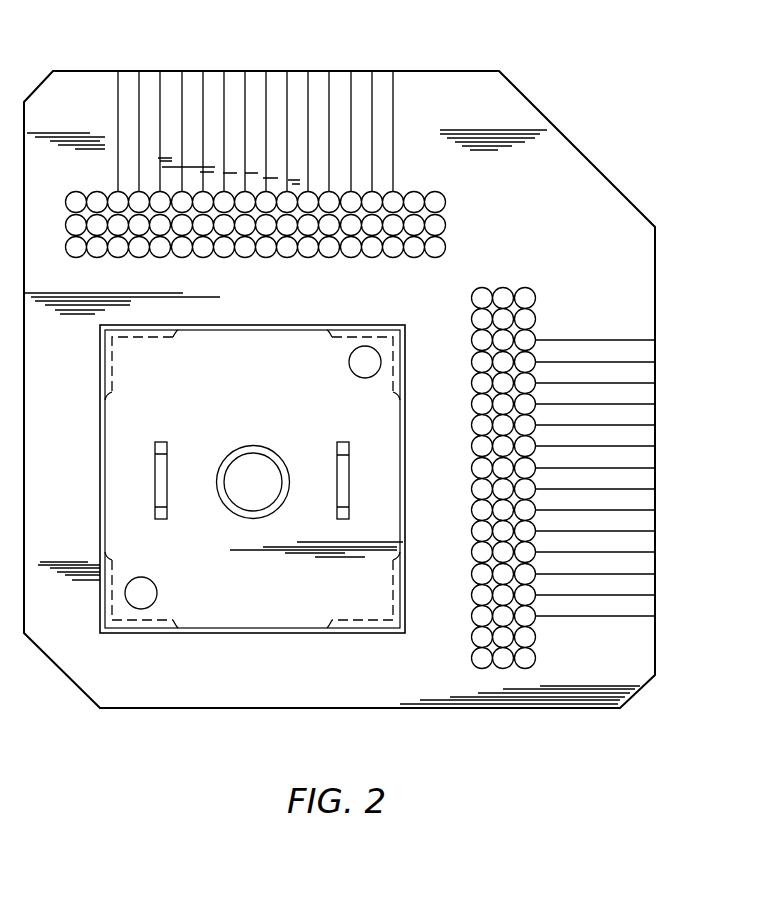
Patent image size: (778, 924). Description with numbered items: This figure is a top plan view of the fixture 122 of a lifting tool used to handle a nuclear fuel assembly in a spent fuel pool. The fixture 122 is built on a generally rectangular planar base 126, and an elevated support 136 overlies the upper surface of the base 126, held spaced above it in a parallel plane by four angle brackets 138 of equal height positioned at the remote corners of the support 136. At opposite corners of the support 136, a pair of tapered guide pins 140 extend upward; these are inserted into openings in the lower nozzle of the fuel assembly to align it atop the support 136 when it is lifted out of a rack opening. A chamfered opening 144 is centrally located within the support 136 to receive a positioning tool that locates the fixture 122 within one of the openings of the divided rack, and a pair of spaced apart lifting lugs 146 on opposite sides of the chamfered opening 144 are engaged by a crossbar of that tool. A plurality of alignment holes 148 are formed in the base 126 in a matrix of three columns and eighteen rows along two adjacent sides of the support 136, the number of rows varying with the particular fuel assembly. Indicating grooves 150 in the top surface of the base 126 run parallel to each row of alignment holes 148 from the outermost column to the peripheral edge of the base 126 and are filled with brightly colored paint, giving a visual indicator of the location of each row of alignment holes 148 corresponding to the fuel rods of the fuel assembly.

The fixture 122 is at (547, 713).
The base 126 is at (182, 693).
The elevated support 136 is at (233, 355).
The angle brackets 138 is at (100, 371).
The tapered guide pins 140 is at (361, 363).
The chamfered opening 144 is at (253, 472).
The lifting lugs 146 is at (155, 472).
The alignment holes 148 is at (436, 247).
The indicating grooves 150 is at (139, 83).